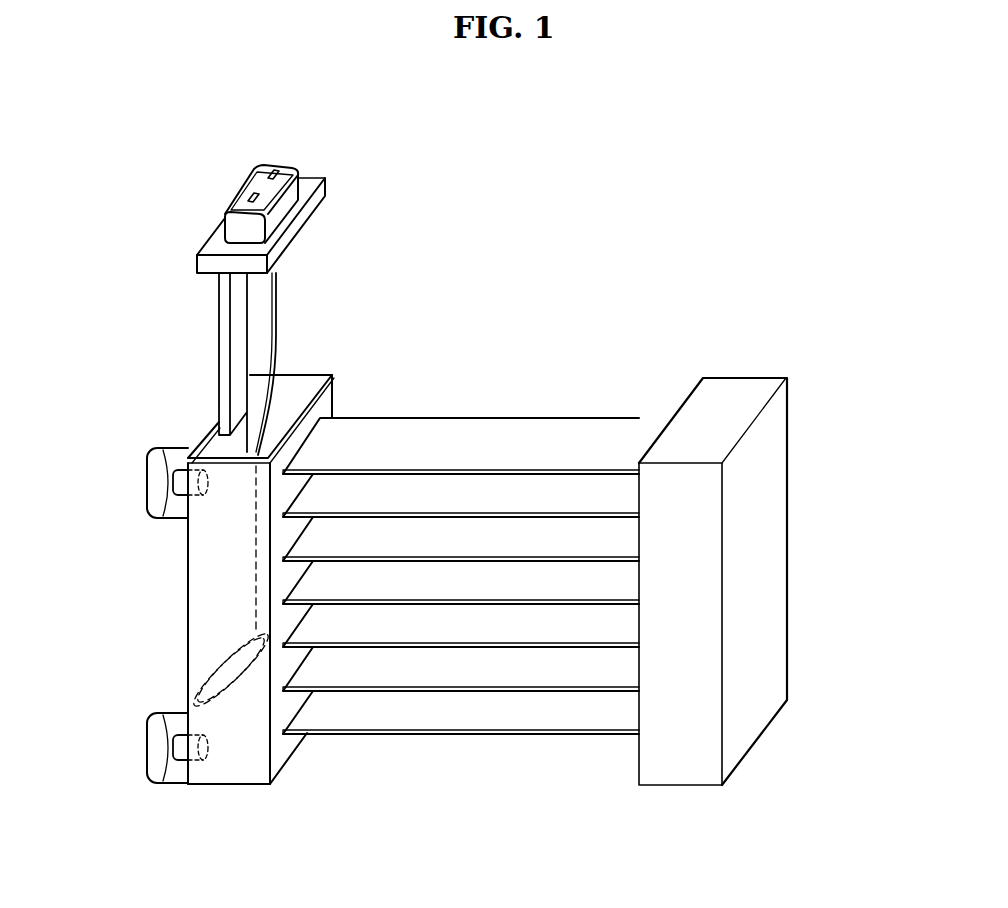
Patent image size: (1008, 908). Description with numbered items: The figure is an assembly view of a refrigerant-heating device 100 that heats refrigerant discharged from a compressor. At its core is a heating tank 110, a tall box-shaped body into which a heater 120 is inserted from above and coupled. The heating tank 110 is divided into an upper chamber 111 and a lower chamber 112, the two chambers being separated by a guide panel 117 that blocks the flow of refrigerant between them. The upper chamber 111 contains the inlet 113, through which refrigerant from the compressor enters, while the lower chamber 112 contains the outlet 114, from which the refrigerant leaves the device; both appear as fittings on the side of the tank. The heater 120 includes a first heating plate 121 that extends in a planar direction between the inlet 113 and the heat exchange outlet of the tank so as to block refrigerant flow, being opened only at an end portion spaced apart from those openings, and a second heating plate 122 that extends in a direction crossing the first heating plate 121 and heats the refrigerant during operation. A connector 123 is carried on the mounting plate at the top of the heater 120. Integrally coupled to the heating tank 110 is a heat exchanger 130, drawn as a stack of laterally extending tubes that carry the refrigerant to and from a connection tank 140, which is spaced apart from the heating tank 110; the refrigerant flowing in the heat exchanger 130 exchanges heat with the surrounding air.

The refrigerant-heating device 100 is at (703, 236).
The heating tank 110 is at (188, 577).
The upper chamber 111 is at (213, 622).
The lower chamber 112 is at (242, 751).
The inlet 113 is at (203, 478).
The outlet 114 is at (203, 748).
The guide panel 117 is at (228, 662).
The heater 120 is at (189, 264).
The first heating plate 121 is at (226, 350).
The second heating plate 122 is at (278, 300).
The connector 123 is at (293, 188).
The heat exchanger 130 is at (460, 740).
The connection tank 140 is at (770, 600).